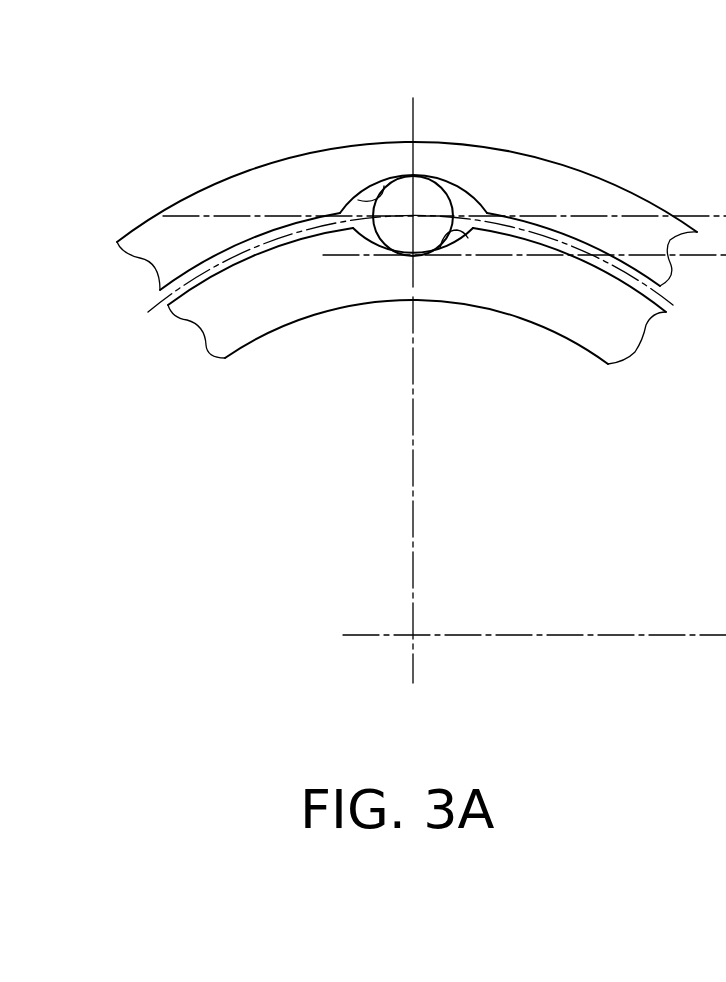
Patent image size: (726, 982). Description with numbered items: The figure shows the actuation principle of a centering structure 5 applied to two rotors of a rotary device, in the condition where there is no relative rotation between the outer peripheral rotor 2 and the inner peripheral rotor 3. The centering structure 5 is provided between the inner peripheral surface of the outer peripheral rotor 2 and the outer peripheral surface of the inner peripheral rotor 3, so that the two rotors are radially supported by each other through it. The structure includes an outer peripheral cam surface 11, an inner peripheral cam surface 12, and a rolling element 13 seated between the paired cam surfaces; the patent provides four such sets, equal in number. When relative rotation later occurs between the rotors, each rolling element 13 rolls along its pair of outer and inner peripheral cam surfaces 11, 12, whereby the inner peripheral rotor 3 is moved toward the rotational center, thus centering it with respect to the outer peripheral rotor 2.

The outer peripheral rotor 2 is at (238, 192).
The inner peripheral rotor 3 is at (263, 317).
The centering structure 5 is at (472, 191).
The outer peripheral cam surface 11 is at (382, 187).
The inner peripheral cam surface 12 is at (440, 250).
The rolling element 13 is at (400, 233).